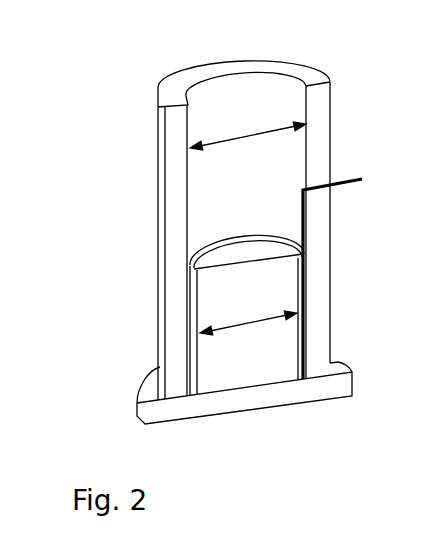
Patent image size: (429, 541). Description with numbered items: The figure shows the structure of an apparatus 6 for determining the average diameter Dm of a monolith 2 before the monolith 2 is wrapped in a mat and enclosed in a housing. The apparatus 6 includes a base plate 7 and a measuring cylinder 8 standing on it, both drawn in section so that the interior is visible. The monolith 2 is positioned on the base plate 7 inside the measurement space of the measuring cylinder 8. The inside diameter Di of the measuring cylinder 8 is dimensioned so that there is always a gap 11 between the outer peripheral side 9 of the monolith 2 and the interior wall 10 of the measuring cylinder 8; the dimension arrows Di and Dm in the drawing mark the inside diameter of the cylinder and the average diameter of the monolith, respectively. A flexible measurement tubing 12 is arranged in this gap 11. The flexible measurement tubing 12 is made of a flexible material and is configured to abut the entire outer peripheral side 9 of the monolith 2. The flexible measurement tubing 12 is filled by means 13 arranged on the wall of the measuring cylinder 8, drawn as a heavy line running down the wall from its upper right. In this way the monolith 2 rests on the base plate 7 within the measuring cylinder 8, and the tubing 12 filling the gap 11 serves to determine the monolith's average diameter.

The apparatus 6 is at (92, 109).
The interior wall 10 is at (244, 66).
The measuring cylinder 8 is at (173, 287).
The gap 11 is at (314, 331).
The monolith 2 is at (278, 275).
The outer peripheral side 9 is at (186, 352).
The flexible measurement tubing 12 is at (195, 265).
The means for filling 13 is at (353, 166).
The base plate 7 is at (140, 388).